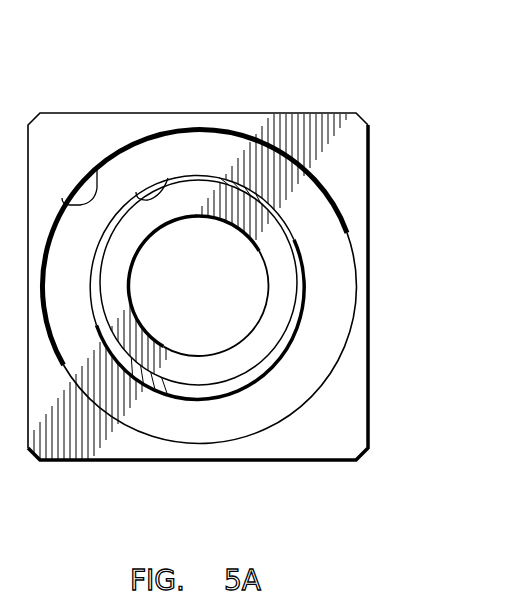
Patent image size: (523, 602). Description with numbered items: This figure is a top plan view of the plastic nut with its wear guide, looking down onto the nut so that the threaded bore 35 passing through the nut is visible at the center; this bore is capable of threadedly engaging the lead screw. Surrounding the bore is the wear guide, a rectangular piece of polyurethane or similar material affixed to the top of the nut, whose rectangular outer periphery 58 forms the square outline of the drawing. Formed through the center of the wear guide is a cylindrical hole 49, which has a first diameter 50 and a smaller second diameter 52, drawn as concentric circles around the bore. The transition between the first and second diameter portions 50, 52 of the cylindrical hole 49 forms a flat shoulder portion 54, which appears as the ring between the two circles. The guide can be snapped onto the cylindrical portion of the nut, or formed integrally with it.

The threaded bore 35 is at (237, 283).
The cylindrical hole 49 is at (231, 148).
The first diameter 50 is at (97, 172).
The second diameter 52 is at (167, 177).
The flat shoulder portion 54 is at (285, 320).
The outer periphery 58 is at (368, 403).